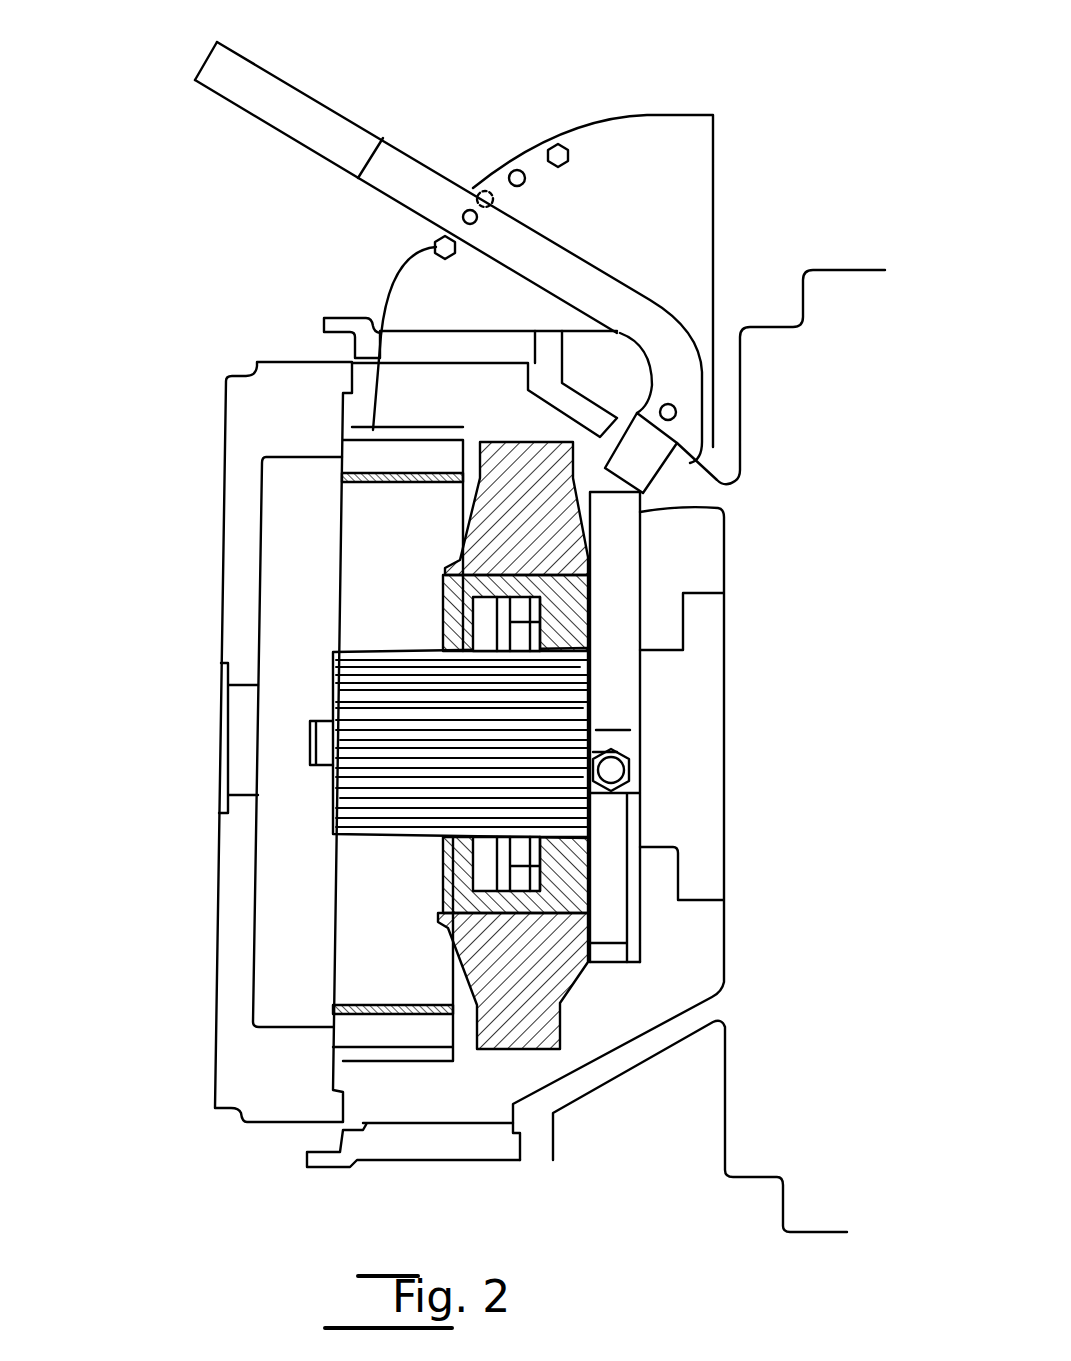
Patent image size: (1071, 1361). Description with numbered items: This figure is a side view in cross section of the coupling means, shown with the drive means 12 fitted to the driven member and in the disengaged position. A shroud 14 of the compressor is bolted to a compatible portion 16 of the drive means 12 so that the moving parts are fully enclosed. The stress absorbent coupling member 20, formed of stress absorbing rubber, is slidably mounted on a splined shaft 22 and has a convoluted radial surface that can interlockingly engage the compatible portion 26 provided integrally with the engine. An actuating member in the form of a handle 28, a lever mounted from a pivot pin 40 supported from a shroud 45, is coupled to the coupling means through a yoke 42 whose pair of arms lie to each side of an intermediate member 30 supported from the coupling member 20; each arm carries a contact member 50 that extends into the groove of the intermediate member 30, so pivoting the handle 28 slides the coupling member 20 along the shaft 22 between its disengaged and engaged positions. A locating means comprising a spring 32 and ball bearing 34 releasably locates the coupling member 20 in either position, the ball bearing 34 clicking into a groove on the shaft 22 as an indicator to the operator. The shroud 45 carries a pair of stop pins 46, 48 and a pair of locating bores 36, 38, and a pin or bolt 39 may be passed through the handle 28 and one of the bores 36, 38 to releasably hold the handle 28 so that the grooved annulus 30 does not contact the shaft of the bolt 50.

The drive means 12 is at (197, 745).
The shroud 14 is at (507, 1147).
The compatible portion of the drive means 16 is at (248, 407).
The stress absorbent coupling member 20 is at (724, 511).
The shaft 22 is at (333, 668).
The compatible portion 26 is at (353, 347).
The handle 28 is at (292, 100).
The intermediate member 30 is at (617, 917).
The spring 32 is at (590, 633).
The ball bearing 34 is at (588, 690).
The locating bore 36 is at (517, 170).
The locating bore 38 is at (480, 190).
The pin or bolt 39 is at (462, 216).
The pivot pin 40 is at (677, 412).
The yoke 42 is at (617, 730).
The shroud 45 is at (660, 133).
The pin 46 is at (570, 145).
The pin 48 is at (422, 248).
The contact member 50 is at (637, 767).